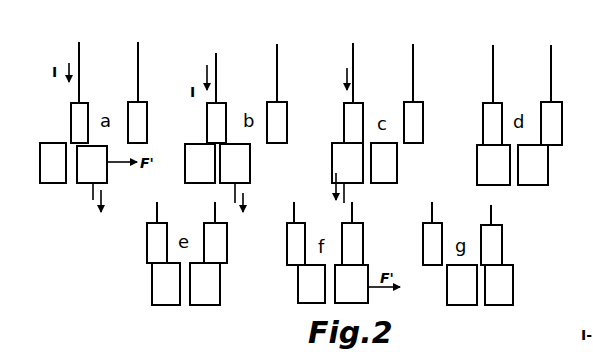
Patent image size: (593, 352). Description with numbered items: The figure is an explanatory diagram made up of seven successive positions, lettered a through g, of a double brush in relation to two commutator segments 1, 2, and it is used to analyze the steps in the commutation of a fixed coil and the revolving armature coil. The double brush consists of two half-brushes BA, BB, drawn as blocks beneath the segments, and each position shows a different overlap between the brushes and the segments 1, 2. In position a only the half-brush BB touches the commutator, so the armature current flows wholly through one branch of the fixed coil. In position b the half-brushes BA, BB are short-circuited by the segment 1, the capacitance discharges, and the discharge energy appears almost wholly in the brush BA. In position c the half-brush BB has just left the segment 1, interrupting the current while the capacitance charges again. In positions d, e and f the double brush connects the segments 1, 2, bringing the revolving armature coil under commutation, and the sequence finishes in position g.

The commutator segment 1 is at (286, 153).
The commutator segment 2 is at (345, 153).
The half-brush BA is at (275, 224).
The half-brush BB is at (312, 224).